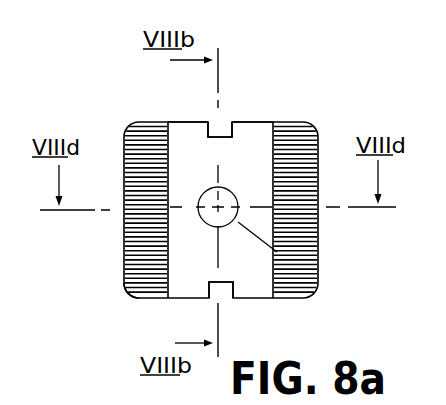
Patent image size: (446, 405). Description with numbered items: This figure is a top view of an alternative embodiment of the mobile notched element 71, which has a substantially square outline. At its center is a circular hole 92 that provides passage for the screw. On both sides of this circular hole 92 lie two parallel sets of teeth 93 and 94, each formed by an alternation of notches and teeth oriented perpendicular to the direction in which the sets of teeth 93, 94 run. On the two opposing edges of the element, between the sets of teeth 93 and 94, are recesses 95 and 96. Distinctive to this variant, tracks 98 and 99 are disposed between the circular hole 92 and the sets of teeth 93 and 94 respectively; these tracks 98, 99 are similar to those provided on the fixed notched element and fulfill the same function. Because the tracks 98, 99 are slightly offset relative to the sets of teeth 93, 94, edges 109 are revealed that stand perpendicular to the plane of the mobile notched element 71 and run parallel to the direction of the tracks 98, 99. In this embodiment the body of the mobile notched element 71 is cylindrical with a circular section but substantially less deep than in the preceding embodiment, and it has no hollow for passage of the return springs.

The mobile notched element 71 is at (105, 118).
The set of teeth 94 is at (138, 258).
The set of teeth 93 is at (300, 233).
The circular hole 92 is at (300, 272).
The track 99 is at (183, 150).
The recess 95 is at (225, 125).
The track 98 is at (252, 151).
The recess 96 is at (224, 288).
The edge 109 is at (160, 255).